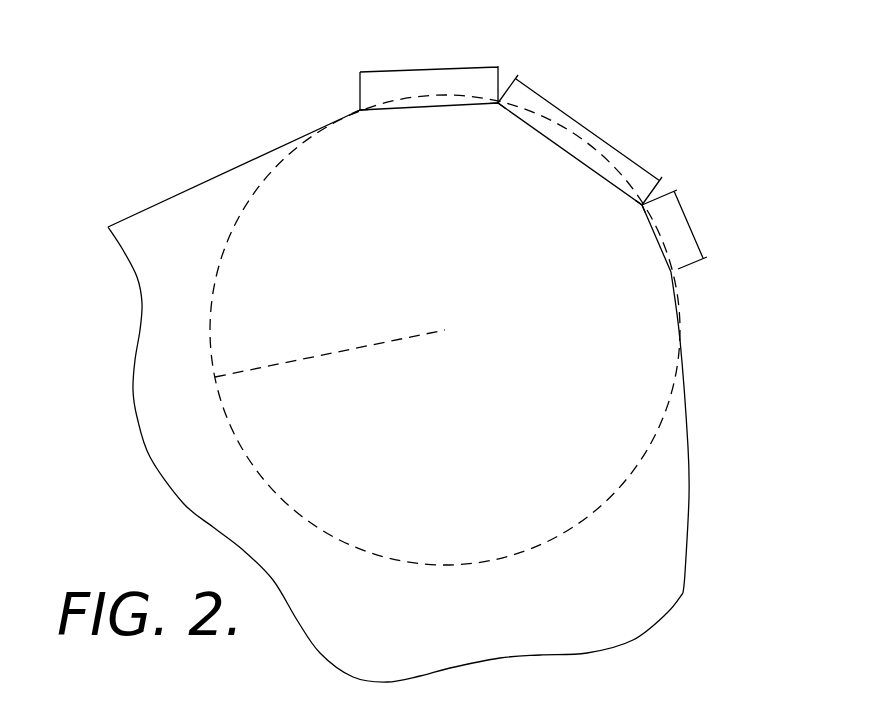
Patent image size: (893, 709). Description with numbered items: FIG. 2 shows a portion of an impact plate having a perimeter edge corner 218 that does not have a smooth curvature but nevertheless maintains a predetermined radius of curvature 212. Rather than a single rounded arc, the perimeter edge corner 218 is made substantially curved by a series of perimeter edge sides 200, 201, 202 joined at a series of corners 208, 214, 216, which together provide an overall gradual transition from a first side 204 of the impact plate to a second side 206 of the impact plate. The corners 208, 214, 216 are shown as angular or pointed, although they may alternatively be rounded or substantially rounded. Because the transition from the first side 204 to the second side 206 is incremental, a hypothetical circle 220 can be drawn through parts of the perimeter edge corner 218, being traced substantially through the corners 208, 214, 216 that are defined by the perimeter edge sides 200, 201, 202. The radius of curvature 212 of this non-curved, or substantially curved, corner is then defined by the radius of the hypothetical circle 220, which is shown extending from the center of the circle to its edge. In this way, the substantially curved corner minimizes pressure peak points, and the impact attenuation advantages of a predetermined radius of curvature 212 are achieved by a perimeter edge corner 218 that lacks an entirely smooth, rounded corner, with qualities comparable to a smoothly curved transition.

The perimeter edge side 200 is at (432, 72).
The perimeter edge side 201 is at (595, 128).
The perimeter edge side 202 is at (688, 225).
The first side 204 is at (688, 443).
The second side 206 is at (245, 155).
The corner 208 is at (646, 201).
The radius of curvature 212 is at (325, 357).
The corner 214 is at (500, 103).
The corner 216 is at (360, 110).
The perimeter edge corner 218 is at (334, 64).
The hypothetical circle 220 is at (607, 500).